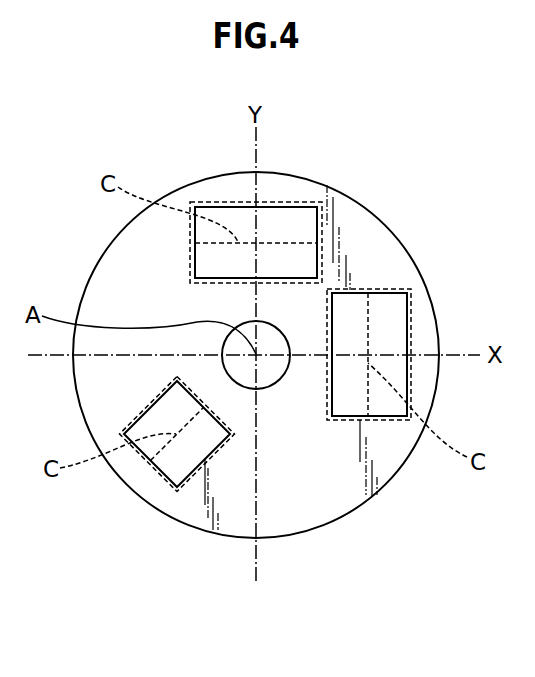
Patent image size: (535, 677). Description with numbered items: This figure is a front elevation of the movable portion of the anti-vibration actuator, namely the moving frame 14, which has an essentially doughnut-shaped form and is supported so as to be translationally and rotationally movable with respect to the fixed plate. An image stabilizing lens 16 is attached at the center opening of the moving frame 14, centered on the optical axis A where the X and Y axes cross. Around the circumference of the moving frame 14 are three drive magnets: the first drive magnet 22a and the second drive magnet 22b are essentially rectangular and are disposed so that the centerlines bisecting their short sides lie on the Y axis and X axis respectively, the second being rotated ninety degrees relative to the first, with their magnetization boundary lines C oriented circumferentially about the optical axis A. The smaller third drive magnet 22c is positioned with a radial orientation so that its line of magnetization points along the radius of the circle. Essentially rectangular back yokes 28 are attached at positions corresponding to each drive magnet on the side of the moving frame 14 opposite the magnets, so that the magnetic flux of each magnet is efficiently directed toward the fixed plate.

The moving frame 14 is at (408, 250).
The image stabilizing lens 16 is at (240, 328).
The first drive magnet 22a is at (227, 202).
The second drive magnet 22b is at (412, 317).
The third drive magnet 22c is at (166, 483).
The back yoke 28 is at (290, 205).